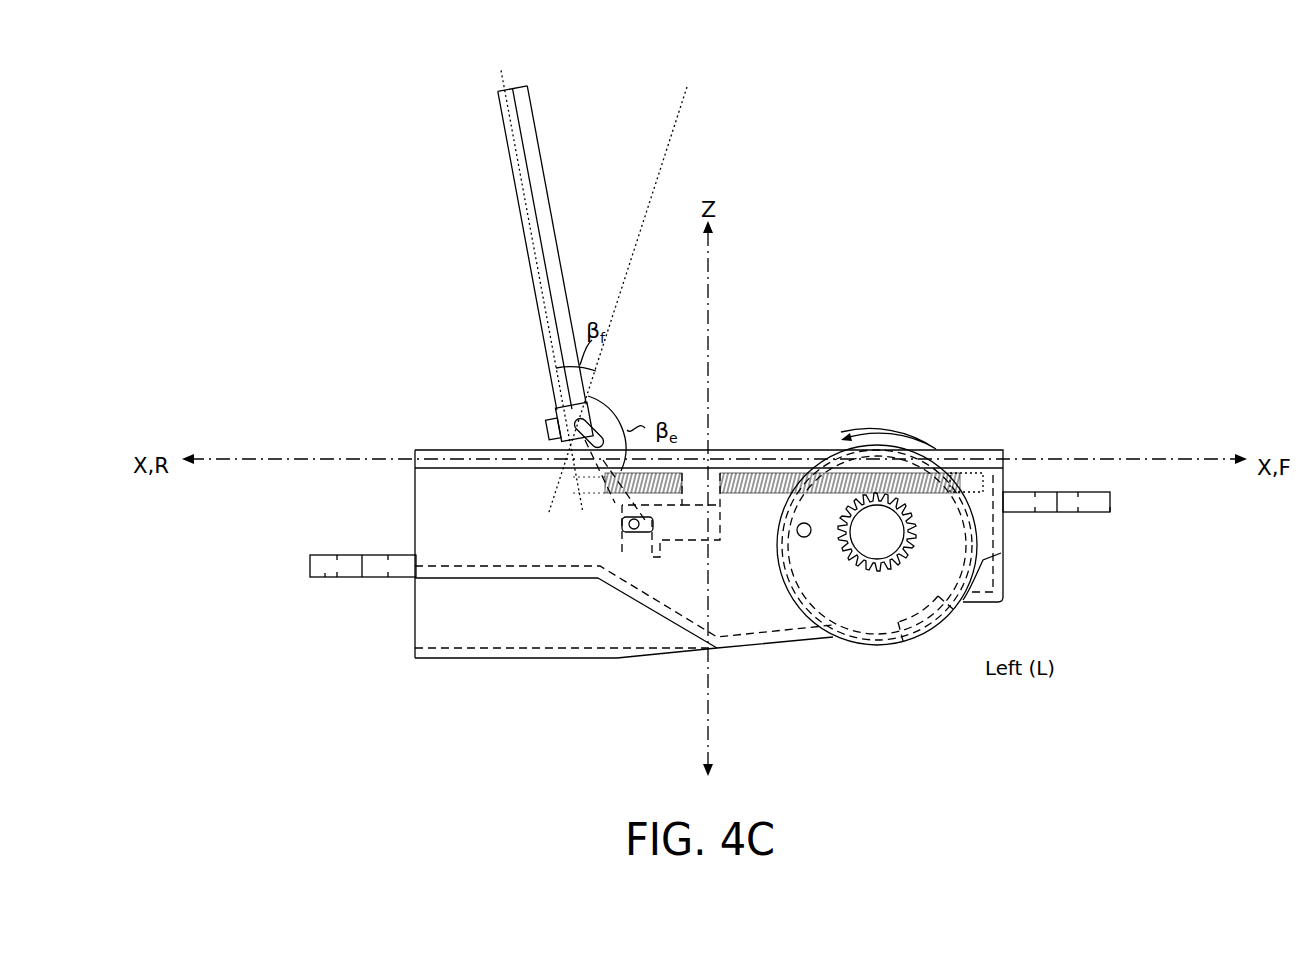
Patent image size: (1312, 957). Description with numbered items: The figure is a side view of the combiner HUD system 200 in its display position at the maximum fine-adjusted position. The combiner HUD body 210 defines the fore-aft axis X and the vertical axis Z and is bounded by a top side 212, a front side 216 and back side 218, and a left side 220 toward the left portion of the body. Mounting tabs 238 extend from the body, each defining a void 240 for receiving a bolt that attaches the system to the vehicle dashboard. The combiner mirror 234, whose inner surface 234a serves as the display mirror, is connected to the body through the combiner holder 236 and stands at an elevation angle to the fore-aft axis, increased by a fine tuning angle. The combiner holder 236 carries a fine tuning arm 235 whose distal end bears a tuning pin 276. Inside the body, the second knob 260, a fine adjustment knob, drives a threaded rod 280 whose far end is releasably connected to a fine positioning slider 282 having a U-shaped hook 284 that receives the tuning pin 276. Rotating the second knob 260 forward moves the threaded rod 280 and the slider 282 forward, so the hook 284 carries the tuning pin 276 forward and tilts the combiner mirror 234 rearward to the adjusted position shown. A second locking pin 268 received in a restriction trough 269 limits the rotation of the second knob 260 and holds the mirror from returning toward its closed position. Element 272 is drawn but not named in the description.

The combiner HUD system 200 is at (414, 236).
The combiner HUD body 210 is at (450, 449).
The top side 212 is at (966, 442).
The front side 216 is at (1010, 546).
The back side 218 is at (430, 490).
The left side 220 is at (531, 615).
The combiner mirror 234 is at (528, 92).
The inner surface 234a is at (542, 188).
The fine tuning arm 235 is at (577, 500).
The combiner holder 236 is at (557, 408).
The mounting tab 238 is at (325, 576).
The void 240 is at (353, 552).
The second knob 260 is at (962, 523).
The second locking pin 268 is at (938, 623).
The restriction trough 269 is at (982, 600).
The rotary housing 272 is at (810, 572).
The tuning pin 276 is at (630, 522).
The threaded rod 280 is at (760, 483).
The fine positioning slider 282 is at (717, 540).
The U-shaped hook 284 is at (622, 543).